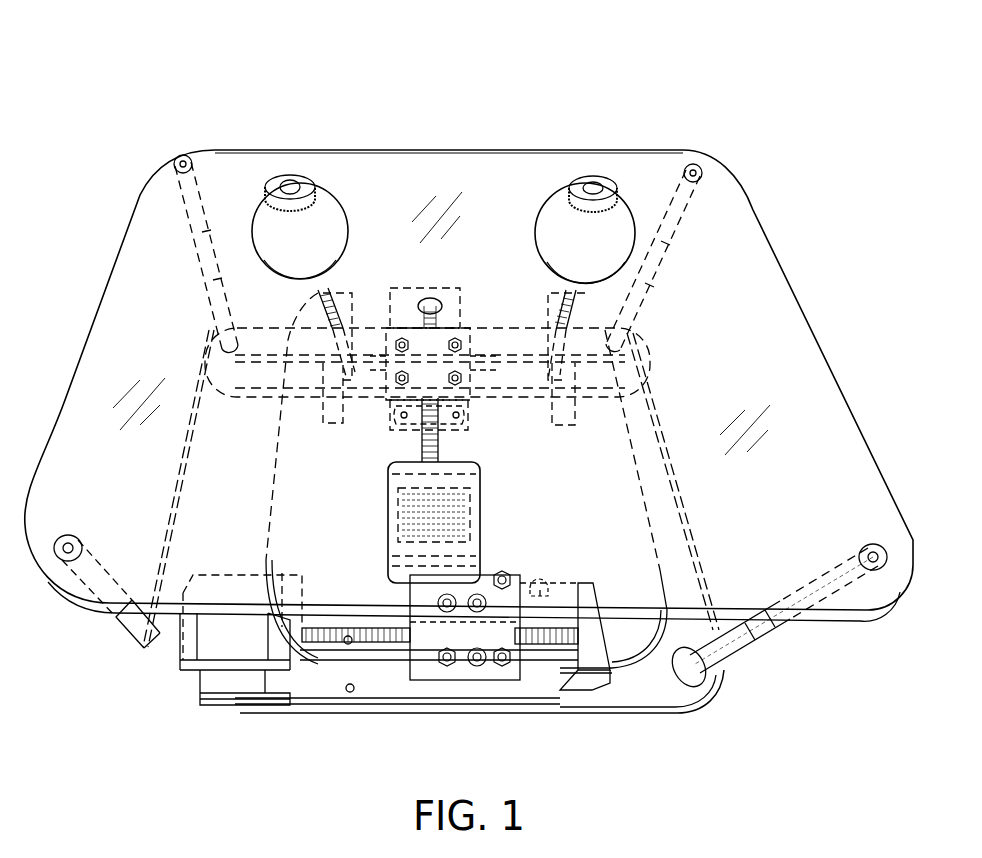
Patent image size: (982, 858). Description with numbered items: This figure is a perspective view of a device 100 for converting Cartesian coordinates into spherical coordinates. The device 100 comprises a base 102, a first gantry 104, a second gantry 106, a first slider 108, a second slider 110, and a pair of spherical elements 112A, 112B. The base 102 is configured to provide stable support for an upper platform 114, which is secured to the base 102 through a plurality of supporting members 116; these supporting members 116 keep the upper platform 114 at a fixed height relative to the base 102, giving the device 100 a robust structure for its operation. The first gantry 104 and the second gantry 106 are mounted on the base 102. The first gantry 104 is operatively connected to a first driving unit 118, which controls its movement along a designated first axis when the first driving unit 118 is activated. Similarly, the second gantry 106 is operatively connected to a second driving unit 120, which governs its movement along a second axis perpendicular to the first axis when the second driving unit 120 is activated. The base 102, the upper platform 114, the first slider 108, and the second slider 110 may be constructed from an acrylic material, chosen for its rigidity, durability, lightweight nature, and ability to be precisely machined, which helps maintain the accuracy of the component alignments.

The device 100 is at (228, 50).
The base 102 is at (678, 704).
The first gantry 104 is at (440, 345).
The second gantry 106 is at (466, 688).
The first slider 108 is at (205, 368).
The second slider 110 is at (638, 668).
The spherical element 112A is at (290, 165).
The spherical element 112B is at (590, 165).
The upper platform 114 is at (752, 212).
The supporting members 116 is at (768, 652).
The first driving unit 118 is at (395, 512).
The second driving unit 120 is at (226, 655).